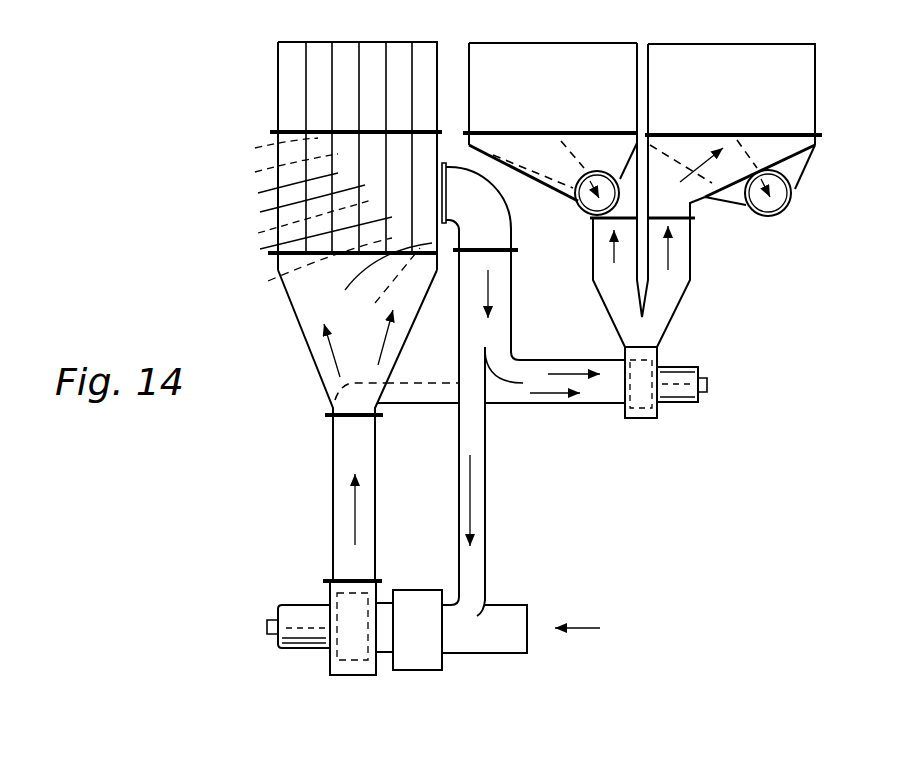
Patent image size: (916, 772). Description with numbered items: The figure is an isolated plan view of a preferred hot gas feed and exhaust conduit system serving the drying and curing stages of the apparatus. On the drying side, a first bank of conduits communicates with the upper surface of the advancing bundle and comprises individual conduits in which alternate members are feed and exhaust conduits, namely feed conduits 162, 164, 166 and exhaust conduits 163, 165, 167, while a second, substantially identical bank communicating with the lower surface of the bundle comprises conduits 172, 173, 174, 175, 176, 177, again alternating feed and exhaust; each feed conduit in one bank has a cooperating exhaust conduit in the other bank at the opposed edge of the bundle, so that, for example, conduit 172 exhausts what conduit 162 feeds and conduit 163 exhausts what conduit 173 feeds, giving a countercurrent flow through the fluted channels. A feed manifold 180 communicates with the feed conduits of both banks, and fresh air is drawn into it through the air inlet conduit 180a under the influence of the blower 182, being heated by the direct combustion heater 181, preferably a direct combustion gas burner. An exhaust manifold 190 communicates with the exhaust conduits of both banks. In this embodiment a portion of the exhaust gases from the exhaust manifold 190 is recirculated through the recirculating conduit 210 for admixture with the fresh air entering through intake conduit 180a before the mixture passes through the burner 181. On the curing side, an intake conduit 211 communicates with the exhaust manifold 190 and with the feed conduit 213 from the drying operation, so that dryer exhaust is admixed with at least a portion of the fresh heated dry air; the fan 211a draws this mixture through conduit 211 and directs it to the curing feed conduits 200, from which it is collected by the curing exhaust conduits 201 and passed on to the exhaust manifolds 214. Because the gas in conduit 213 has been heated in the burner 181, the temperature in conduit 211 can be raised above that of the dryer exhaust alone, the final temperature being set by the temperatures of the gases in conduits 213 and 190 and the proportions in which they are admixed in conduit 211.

The feed conduit 162 is at (290, 69).
The exhaust conduit 172 is at (288, 88).
The exhaust conduit 163 is at (310, 105).
The feed conduit 173 is at (267, 145).
The conduit 174 is at (277, 167).
The feed conduit 164 is at (277, 187).
The exhaust conduit 165 is at (292, 203).
The conduit 175 is at (294, 222).
The feed conduit 166 is at (304, 240).
The conduit 176 is at (310, 265).
The exhaust conduit 167 is at (369, 272).
The conduit 177 is at (379, 281).
The feed manifold 180 is at (318, 345).
The feed conduit 213 is at (430, 405).
The exhaust manifold 190 is at (490, 240).
The recirculating conduit 210 is at (488, 450).
The blower 182 is at (350, 675).
The heating means 181 is at (421, 670).
The air inlet conduit 180a is at (530, 650).
The intake conduit 211 is at (607, 361).
The fan 211a is at (638, 420).
The exhaust conduit 201 is at (530, 155).
The feed conduit 200 is at (533, 178).
The exhaust manifold 214 is at (598, 217).